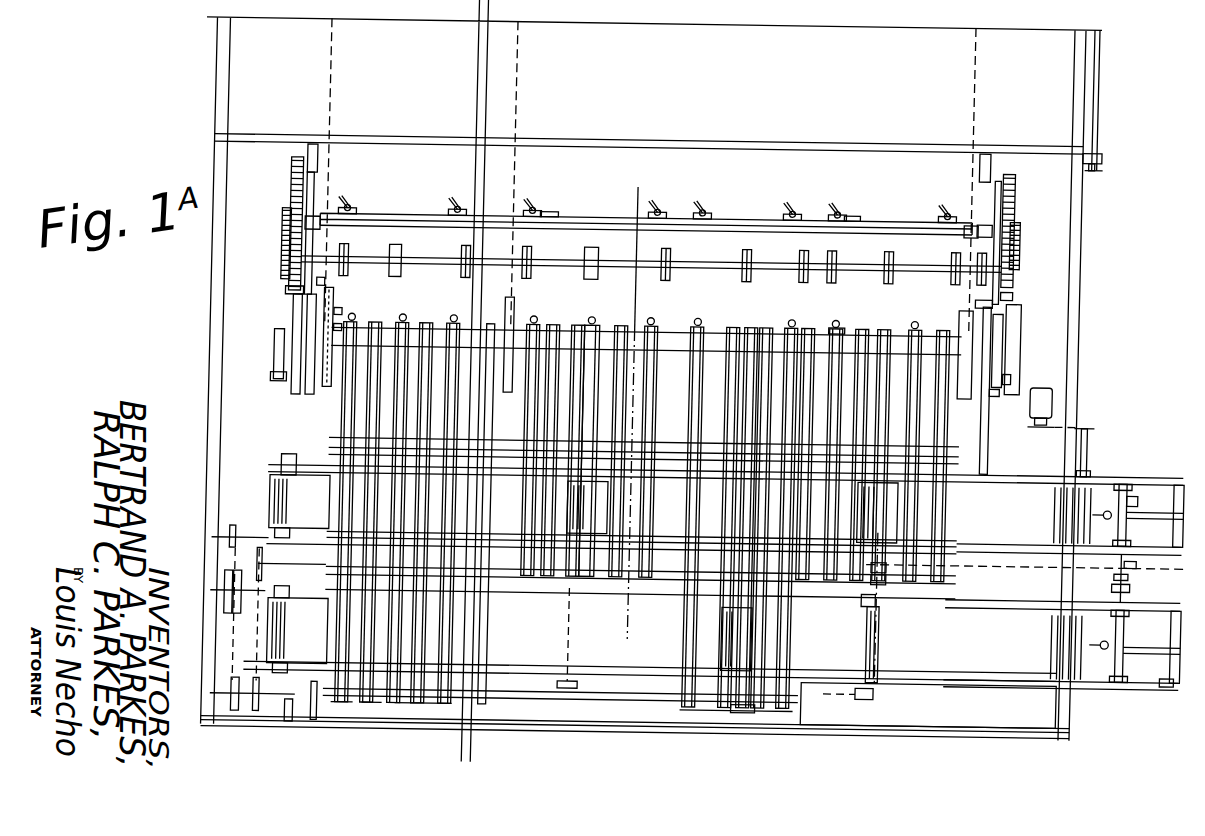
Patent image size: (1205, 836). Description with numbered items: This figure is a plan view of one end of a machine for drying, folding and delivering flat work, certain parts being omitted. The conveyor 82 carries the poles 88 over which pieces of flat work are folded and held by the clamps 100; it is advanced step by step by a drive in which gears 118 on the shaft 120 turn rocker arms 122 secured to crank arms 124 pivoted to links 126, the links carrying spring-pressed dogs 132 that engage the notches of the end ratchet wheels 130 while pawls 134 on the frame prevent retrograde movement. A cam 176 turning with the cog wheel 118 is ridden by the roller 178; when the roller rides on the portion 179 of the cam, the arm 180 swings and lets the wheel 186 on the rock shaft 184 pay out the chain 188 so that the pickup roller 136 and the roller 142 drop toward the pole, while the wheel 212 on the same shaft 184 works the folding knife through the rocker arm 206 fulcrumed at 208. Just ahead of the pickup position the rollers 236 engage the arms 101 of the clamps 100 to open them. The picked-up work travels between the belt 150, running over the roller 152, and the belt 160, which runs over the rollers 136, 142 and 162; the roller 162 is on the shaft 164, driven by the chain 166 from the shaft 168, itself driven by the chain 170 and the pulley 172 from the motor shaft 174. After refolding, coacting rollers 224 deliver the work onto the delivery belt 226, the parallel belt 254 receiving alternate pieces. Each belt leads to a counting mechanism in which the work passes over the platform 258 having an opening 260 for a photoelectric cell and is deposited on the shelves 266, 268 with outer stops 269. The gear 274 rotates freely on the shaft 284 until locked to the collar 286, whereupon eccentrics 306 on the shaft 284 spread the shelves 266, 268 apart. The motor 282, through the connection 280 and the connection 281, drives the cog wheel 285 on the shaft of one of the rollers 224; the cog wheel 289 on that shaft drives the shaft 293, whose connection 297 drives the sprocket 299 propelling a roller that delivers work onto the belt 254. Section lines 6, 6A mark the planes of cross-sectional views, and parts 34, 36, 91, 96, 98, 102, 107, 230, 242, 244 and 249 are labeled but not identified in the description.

The bracket 34 is at (1093, 167).
The upright post 36 is at (1092, 113).
The conveyor 82 is at (325, 120).
The pole 88 is at (663, 226).
The panels / cross frame 91 is at (650, 101).
The cam lever 96 is at (810, 212).
The cam block 98 is at (848, 224).
The clamp 100 is at (698, 212).
The clamp arm 101 is at (453, 210).
The operating rail 102 is at (338, 232).
The block 107 is at (543, 214).
The gear 118 is at (286, 172).
The shaft 120 is at (883, 232).
The rocker arm 122 is at (280, 228).
The crank arm 124 is at (281, 283).
The link 126 is at (273, 357).
The end ratchet wheel 130 is at (285, 338).
The spring-pressed dog 132 is at (288, 387).
The pawl 134 is at (292, 312).
The pickup roller 136 is at (508, 318).
The roller 142 is at (598, 340).
The belt 150 is at (393, 445).
The roller 152 is at (935, 470).
The belt 160 is at (366, 638).
The roller 162 is at (360, 712).
The shaft 164 is at (295, 572).
The belt or sprocket chain 166 is at (258, 639).
The shaft 168 is at (295, 727).
The belt or sprocket chain 170 is at (237, 667).
The pulley or sprocket 172 is at (225, 587).
The motor shaft 174 is at (248, 540).
The cam 176 is at (303, 196).
The roller 178 is at (283, 296).
The cam portion 179 is at (1126, 562).
The arm 180 is at (322, 287).
The rock shaft 184 is at (763, 262).
The wheel 186 is at (665, 258).
The chain 188 is at (798, 282).
The rocker arm 206 is at (833, 325).
The fulcrum 208 is at (408, 345).
The wheel 212 is at (830, 281).
The longitudinal rollers 224 is at (872, 517).
The delivery belt 226 is at (925, 520).
The rod 230 is at (574, 608).
The roller 236 is at (692, 333).
The pin 242 is at (340, 333).
The pin 244 is at (340, 316).
The boxes 249 is at (350, 216).
The belt 254 is at (1061, 645).
The platform 258 is at (1103, 657).
The opening 260 is at (1104, 510).
The shelf 266 is at (1153, 589).
The shelf 268 is at (1182, 476).
The outer stop 269 is at (1132, 559).
The gear 274 is at (1124, 582).
The connection 280 is at (1090, 455).
The connection 281 is at (958, 568).
The motor 282 is at (1052, 395).
The shaft 284 is at (1124, 496).
The cog wheel 285 is at (888, 570).
The collar 286 is at (1108, 567).
The cog wheel 289 is at (885, 582).
The shaft 293 is at (884, 660).
The connection 297 is at (928, 706).
The sprocket 299 is at (747, 712).
The eccentric 306 is at (1128, 478).
The section line 6 is at (637, 403).
The section line 6A is at (868, 545).